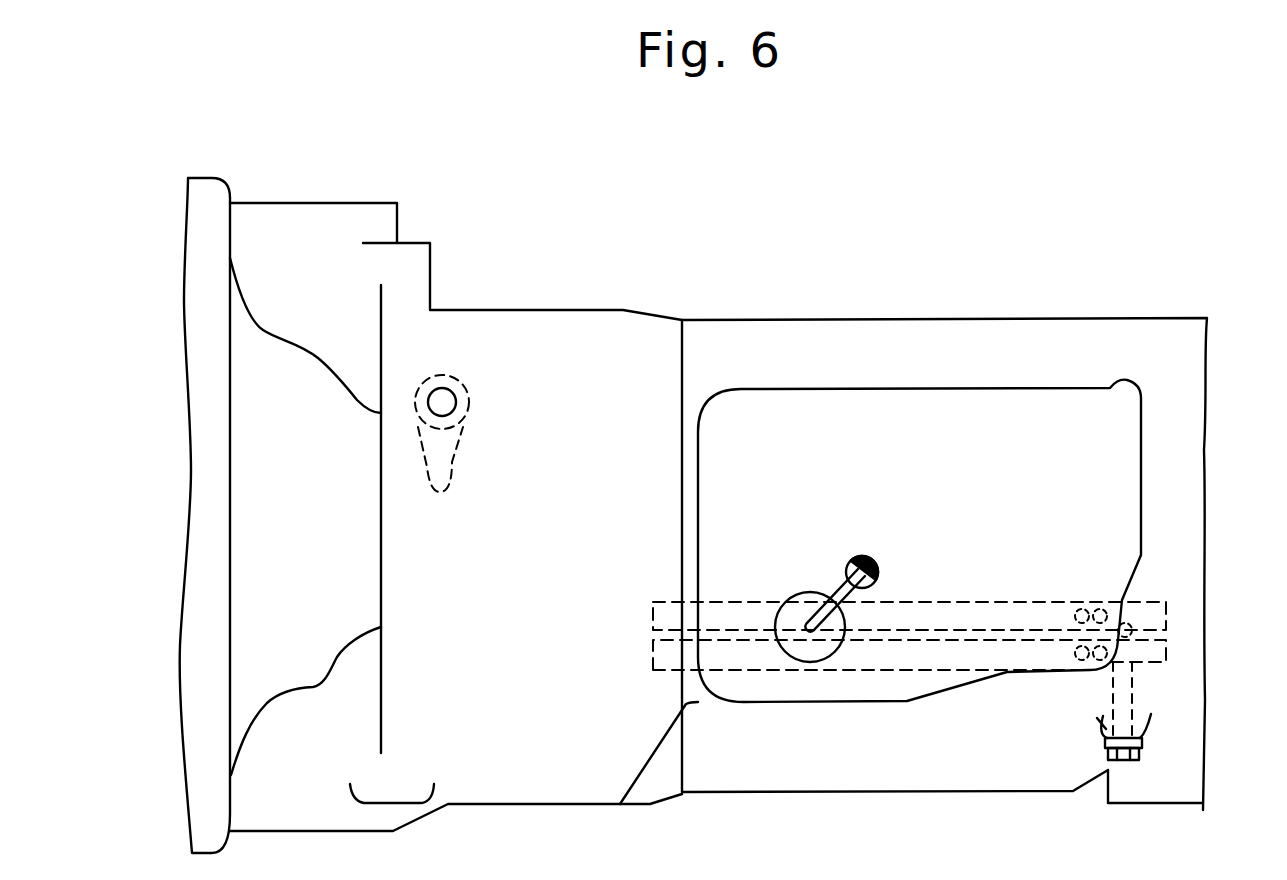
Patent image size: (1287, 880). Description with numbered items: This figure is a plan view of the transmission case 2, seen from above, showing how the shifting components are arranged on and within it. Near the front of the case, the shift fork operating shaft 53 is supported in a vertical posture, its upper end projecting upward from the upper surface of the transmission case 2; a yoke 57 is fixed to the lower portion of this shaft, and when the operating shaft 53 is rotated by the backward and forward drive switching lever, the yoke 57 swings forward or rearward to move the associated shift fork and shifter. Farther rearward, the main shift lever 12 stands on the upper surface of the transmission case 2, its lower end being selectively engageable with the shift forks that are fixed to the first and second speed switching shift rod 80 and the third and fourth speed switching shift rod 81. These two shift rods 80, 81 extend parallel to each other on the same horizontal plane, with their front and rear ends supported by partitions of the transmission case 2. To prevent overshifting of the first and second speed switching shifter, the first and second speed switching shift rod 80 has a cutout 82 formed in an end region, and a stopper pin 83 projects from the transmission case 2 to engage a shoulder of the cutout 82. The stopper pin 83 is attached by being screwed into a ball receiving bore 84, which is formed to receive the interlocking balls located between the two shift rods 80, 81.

The transmission case 2 is at (840, 784).
The main shift lever 12 is at (872, 557).
The shift fork operating shaft 53 is at (448, 400).
The yoke 57 is at (450, 461).
The first and second speed switching shift rod 80 is at (915, 672).
The third and fourth speed switching shift rod 81 is at (985, 603).
The cutout 82 is at (1166, 667).
The stopper pin 83 is at (1133, 690).
The ball receiving bore 84 is at (1102, 720).